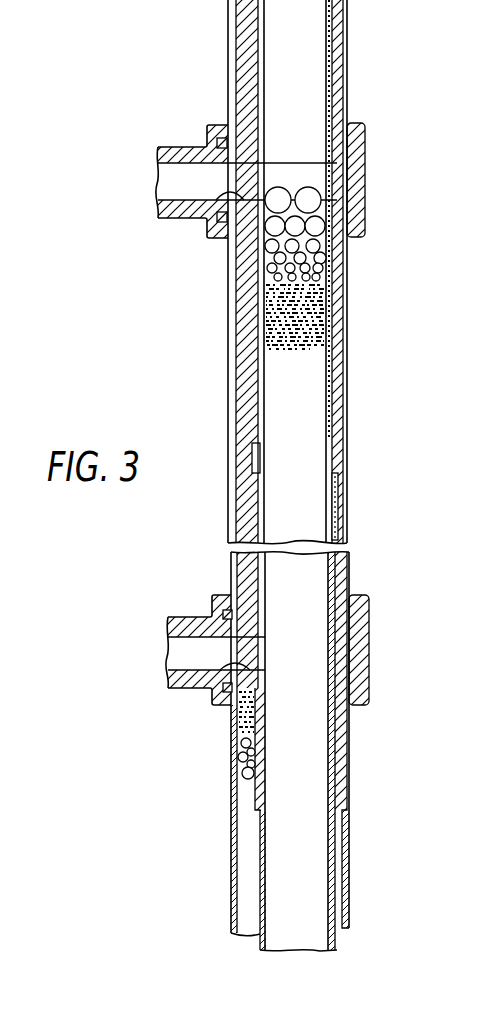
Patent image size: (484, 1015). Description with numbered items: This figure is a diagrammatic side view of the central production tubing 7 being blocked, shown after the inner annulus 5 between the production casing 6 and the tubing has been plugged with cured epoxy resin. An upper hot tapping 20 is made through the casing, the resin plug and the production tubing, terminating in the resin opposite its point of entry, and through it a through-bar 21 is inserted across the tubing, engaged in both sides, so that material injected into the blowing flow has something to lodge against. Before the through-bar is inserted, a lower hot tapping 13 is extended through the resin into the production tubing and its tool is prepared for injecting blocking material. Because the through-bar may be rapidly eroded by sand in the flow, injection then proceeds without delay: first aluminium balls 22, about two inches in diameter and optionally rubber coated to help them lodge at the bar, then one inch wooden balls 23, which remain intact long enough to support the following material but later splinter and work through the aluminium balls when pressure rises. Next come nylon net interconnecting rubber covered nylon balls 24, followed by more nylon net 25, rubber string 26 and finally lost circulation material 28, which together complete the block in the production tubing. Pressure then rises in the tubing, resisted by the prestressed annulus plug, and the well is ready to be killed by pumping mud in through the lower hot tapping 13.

The inner annulus 5 is at (253, 893).
The production casing 6 is at (347, 441).
The central production tubing 7 is at (328, 498).
The lower hot tapping 13 is at (232, 670).
The upper hot tapping 20 is at (213, 203).
The through-bar 21 is at (290, 170).
The aluminium balls 22 is at (318, 232).
The wooden balls 23 is at (320, 255).
The nylon net interconnecting rubber covered nylon balls 24 is at (252, 290).
The nylon net 25 is at (318, 308).
The rubber string 26 is at (258, 332).
The lost circulation material 28 is at (257, 360).